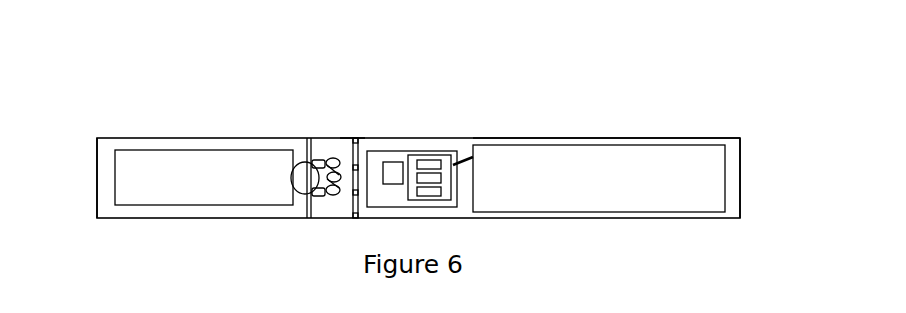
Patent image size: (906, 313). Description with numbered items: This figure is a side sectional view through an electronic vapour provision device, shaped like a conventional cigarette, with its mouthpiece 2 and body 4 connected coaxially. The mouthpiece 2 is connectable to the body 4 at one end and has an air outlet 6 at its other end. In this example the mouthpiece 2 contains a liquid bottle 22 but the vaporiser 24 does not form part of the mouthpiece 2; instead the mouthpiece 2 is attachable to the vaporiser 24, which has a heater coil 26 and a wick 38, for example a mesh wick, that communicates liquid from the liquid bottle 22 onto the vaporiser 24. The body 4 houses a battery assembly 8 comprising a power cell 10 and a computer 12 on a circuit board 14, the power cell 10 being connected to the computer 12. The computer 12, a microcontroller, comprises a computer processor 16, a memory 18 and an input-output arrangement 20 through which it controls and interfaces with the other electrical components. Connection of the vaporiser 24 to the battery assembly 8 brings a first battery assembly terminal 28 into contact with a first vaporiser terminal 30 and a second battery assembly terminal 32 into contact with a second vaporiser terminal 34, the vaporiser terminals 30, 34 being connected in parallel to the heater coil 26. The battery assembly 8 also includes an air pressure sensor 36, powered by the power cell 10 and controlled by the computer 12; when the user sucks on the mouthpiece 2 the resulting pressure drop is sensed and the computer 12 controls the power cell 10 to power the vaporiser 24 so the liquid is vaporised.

The mouthpiece 2 is at (177, 140).
The body 4 is at (606, 90).
The air outlet 6 is at (100, 180).
The battery assembly 8 is at (723, 140).
The power cell 10 is at (577, 167).
The computer 12 is at (454, 165).
The circuit board 14 is at (372, 190).
The computer processor 16 is at (441, 163).
The memory 18 is at (441, 190).
The input-output arrangement 20 is at (441, 176).
The liquid bottle 22 is at (223, 173).
The vaporiser 24 is at (318, 217).
The heater coil 26 is at (330, 194).
The first battery assembly terminal 28 is at (360, 138).
The first vaporiser terminal 30 is at (350, 138).
The second battery assembly terminal 32 is at (326, 163).
The second vaporiser terminal 34 is at (323, 162).
The air pressure sensor 36 is at (402, 177).
The wick 38 is at (291, 180).